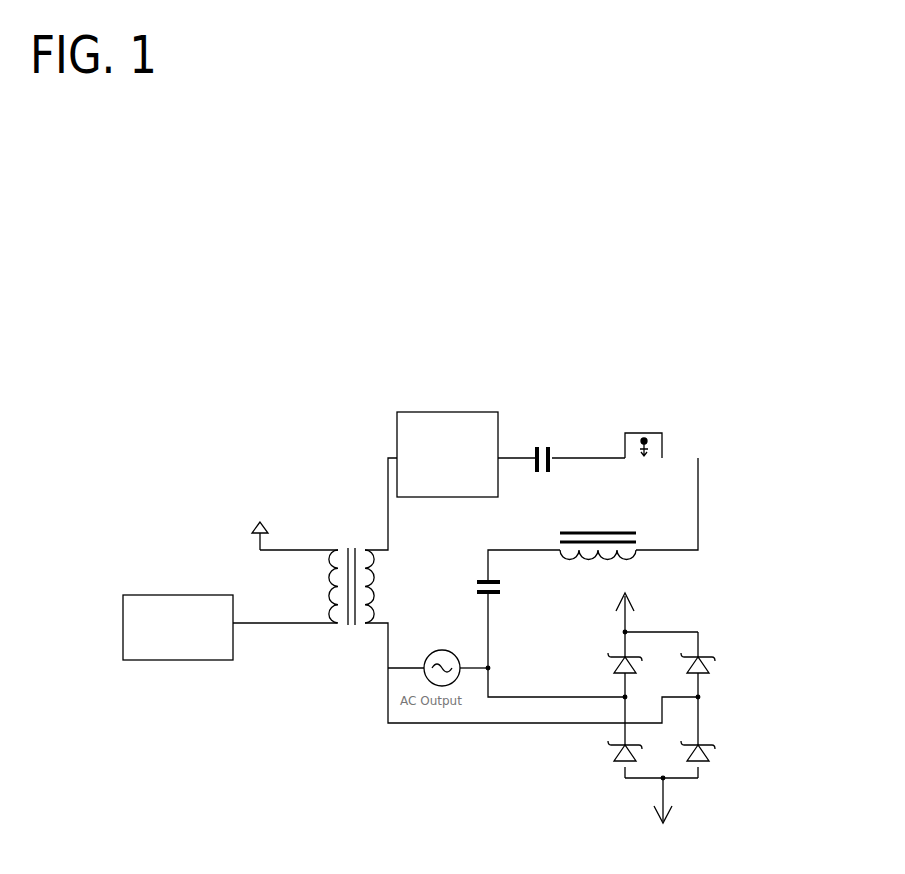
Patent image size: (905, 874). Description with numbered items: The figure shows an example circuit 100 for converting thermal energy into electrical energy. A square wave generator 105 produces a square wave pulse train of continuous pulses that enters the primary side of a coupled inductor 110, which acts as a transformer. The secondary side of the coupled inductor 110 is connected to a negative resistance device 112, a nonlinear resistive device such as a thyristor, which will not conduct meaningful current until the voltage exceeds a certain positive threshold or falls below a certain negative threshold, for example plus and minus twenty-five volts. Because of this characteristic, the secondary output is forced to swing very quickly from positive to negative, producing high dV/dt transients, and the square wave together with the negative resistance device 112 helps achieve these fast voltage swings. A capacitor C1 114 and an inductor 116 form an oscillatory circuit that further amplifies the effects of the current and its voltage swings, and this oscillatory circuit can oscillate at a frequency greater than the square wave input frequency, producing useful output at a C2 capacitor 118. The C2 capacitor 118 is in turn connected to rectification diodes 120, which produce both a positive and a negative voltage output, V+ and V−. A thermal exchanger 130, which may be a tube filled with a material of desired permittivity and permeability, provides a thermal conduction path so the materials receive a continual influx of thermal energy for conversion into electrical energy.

The circuit 100 is at (408, 206).
The square wave generator 105 is at (178, 595).
The coupled inductor 110 is at (352, 550).
The negative resistance device 112 is at (460, 412).
The capacitor C1 114 is at (552, 458).
The inductor 116 is at (637, 531).
The C2 capacitor 118 is at (535, 572).
The rectification diodes 120 is at (745, 755).
The thermal exchanger 130 is at (665, 440).